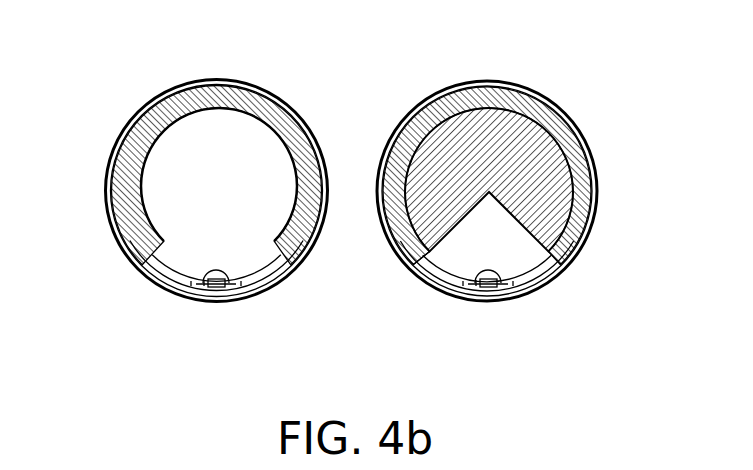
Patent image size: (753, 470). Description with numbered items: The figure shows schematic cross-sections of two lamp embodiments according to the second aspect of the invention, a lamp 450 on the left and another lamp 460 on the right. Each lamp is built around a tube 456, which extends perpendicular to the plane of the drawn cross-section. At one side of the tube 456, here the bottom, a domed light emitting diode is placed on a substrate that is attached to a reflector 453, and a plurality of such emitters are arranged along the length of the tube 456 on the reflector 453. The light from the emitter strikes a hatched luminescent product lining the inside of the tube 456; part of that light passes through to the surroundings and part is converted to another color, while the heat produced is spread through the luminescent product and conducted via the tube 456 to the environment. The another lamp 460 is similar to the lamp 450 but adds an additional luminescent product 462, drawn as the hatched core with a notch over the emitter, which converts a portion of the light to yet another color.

The lamp 450 is at (96, 88).
The reflector 453 is at (167, 273).
The tube 456 is at (246, 80).
The another lamp 460 is at (620, 88).
The additional luminescent product 462 is at (537, 141).